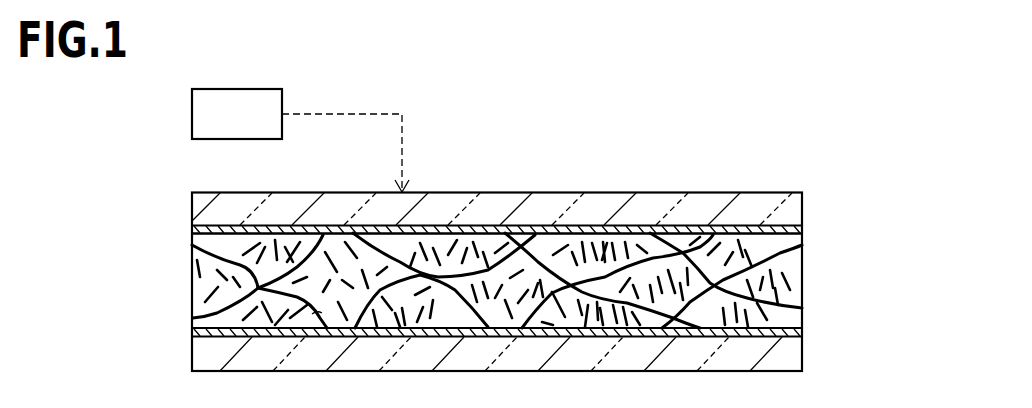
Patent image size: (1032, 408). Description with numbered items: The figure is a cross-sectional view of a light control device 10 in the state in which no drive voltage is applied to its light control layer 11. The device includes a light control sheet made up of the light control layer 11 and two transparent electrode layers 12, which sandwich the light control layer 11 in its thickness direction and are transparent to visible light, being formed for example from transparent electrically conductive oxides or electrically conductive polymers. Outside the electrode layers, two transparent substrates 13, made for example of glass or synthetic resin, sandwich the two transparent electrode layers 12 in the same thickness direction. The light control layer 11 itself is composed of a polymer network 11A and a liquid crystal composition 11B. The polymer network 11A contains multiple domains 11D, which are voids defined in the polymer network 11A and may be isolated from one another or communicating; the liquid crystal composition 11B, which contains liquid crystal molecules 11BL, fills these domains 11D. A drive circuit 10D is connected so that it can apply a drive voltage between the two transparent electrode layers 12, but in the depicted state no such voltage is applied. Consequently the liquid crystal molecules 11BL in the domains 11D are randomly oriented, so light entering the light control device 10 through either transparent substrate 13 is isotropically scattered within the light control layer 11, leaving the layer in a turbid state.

The light control device 10 is at (885, 174).
The drive circuit 10D is at (192, 113).
The light control layer 11 is at (192, 293).
The polymer network 11A is at (318, 238).
The liquid crystal composition 11B is at (543, 322).
The liquid crystal molecules 11BL is at (645, 236).
The domains 11D is at (313, 314).
The transparent electrode layers 12 is at (803, 231).
The transparent substrates 13 is at (192, 203).